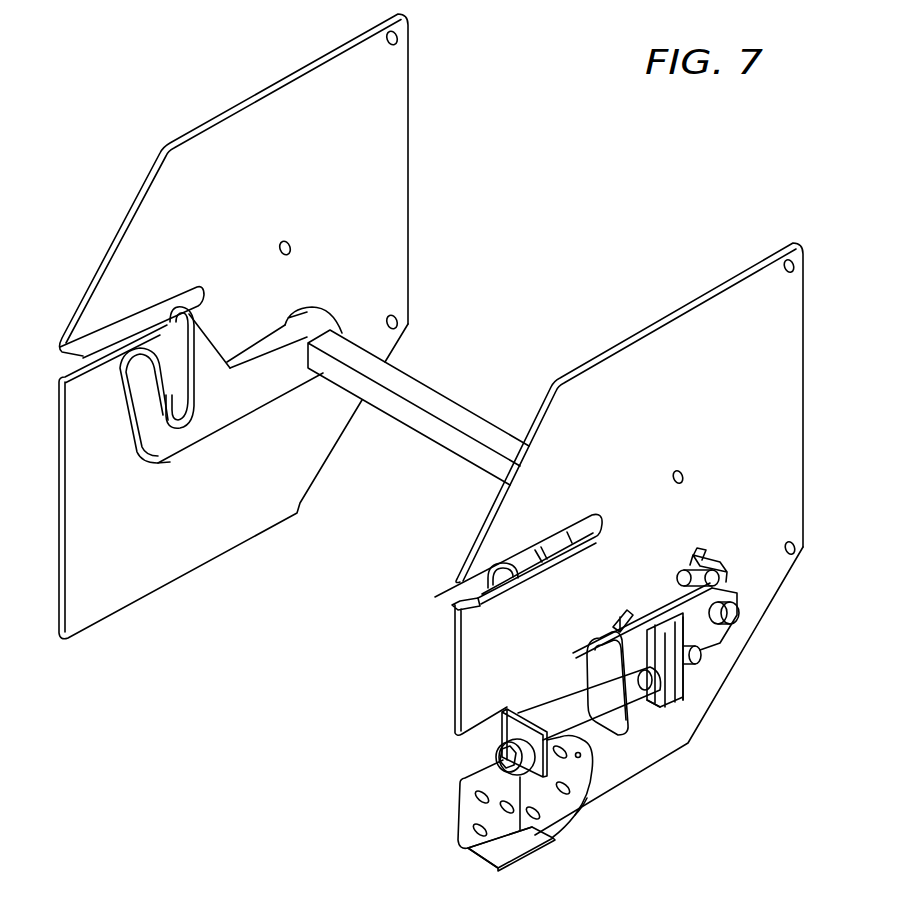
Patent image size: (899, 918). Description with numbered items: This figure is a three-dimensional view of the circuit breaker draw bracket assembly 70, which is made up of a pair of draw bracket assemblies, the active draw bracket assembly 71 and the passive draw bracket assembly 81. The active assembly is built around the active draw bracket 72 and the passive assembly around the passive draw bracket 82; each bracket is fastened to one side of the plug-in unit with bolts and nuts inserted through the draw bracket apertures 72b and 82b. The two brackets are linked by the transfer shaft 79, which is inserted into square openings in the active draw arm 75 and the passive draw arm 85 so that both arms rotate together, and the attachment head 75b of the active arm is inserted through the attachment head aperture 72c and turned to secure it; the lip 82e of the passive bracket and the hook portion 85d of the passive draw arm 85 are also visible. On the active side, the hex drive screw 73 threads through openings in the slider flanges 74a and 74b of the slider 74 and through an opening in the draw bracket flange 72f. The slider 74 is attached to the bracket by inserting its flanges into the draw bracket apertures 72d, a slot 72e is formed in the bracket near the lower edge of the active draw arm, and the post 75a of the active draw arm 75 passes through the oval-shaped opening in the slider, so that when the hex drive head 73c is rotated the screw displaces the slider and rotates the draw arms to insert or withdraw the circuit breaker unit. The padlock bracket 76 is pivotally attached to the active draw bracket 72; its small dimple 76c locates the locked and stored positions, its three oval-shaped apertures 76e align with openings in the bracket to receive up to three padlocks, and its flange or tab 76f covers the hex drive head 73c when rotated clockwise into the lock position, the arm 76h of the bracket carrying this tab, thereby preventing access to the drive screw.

The circuit breaker draw bracket assembly 70 is at (560, 170).
The active draw bracket assembly 71 is at (824, 303).
The active draw bracket 72 is at (786, 386).
The draw bracket apertures 72b is at (786, 274).
The attachment head aperture 72c is at (695, 552).
The draw bracket apertures 72d is at (619, 608).
The slot 72e is at (485, 580).
The draw bracket flange 72f is at (683, 683).
The hex drive screw 73 is at (558, 724).
The hex drive head 73c is at (495, 748).
The slider 74 is at (710, 640).
The slider flange 74a is at (590, 682).
The slider flange 74b is at (667, 700).
The active draw arm 75 is at (477, 586).
The post 75a is at (730, 616).
The attachment head 75b is at (714, 562).
The padlock bracket 76 is at (545, 824).
The small dimple 76c is at (583, 757).
The oval-shaped apertures 76e is at (550, 834).
The padlock bracket flange 76f is at (497, 860).
The bracket arm 76h is at (583, 770).
The transfer shaft 79 is at (428, 398).
The passive draw bracket assembly 81 is at (424, 90).
The passive draw bracket 82 is at (388, 165).
The draw bracket apertures 82b is at (390, 45).
The plate lip 82e is at (82, 360).
The passive draw arm 85 is at (253, 410).
The hook 85d is at (167, 375).